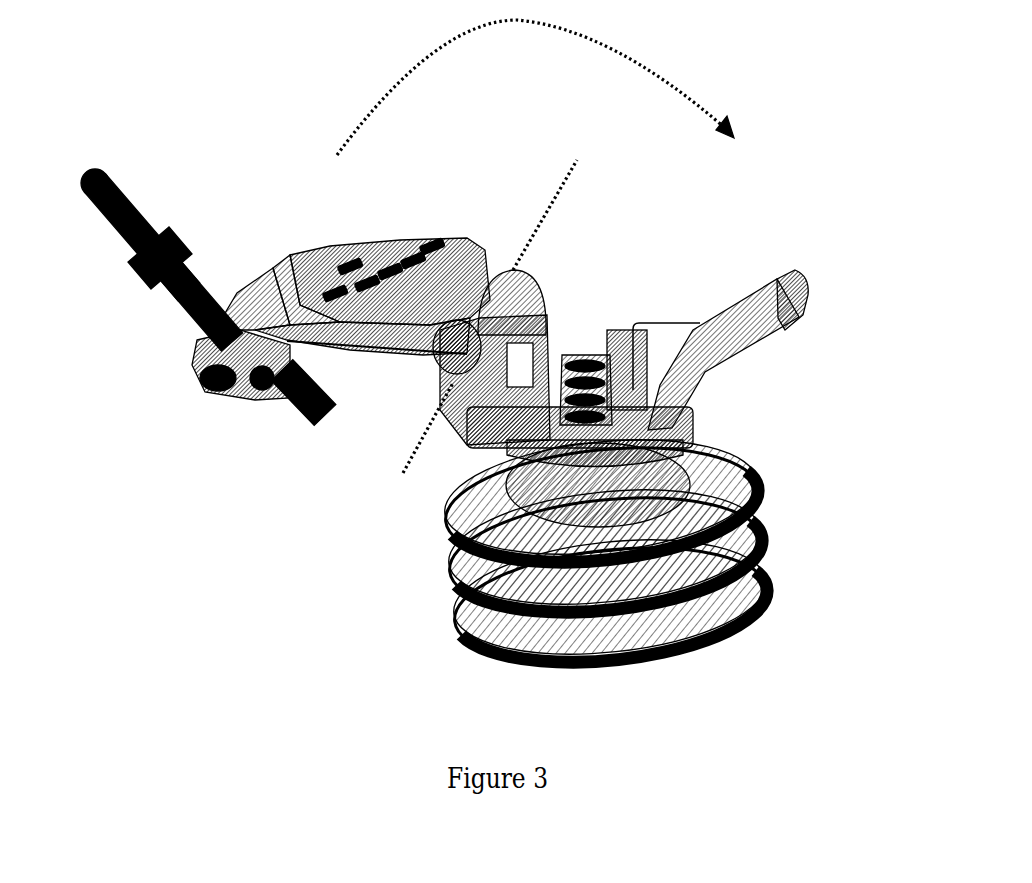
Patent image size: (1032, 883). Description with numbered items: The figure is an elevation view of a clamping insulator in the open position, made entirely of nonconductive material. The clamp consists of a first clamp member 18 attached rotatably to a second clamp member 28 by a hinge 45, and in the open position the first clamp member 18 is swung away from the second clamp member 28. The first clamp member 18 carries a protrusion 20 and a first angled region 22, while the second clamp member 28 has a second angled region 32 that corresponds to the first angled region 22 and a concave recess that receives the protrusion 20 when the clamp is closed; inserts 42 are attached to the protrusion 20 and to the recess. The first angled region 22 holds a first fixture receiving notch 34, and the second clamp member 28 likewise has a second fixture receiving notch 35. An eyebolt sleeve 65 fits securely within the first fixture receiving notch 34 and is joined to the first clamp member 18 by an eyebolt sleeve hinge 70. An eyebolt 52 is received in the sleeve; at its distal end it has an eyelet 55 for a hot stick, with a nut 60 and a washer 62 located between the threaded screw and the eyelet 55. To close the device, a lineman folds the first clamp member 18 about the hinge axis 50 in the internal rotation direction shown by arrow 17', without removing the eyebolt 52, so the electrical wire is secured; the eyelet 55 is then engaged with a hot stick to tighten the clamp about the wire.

The arrow 17' is at (538, 87).
The first clamp member 18 is at (347, 343).
The protrusion 20 is at (335, 292).
The first angled region 22 is at (290, 310).
The second clamp member 28 is at (673, 433).
The second angled region 32 is at (740, 387).
The first fixture receiving notch 34 is at (262, 320).
The second fixture receiving notch 35 is at (783, 323).
The inserts 42 is at (435, 233).
The hinge 45 is at (450, 377).
The hinge axis 50 is at (422, 436).
The eyebolt 52 is at (283, 403).
The eyelet 55 is at (123, 192).
The nut 60 is at (177, 222).
The washer 62 is at (158, 287).
The eyebolt sleeve 65 is at (260, 385).
The eyebolt sleeve hinge 70 is at (207, 388).